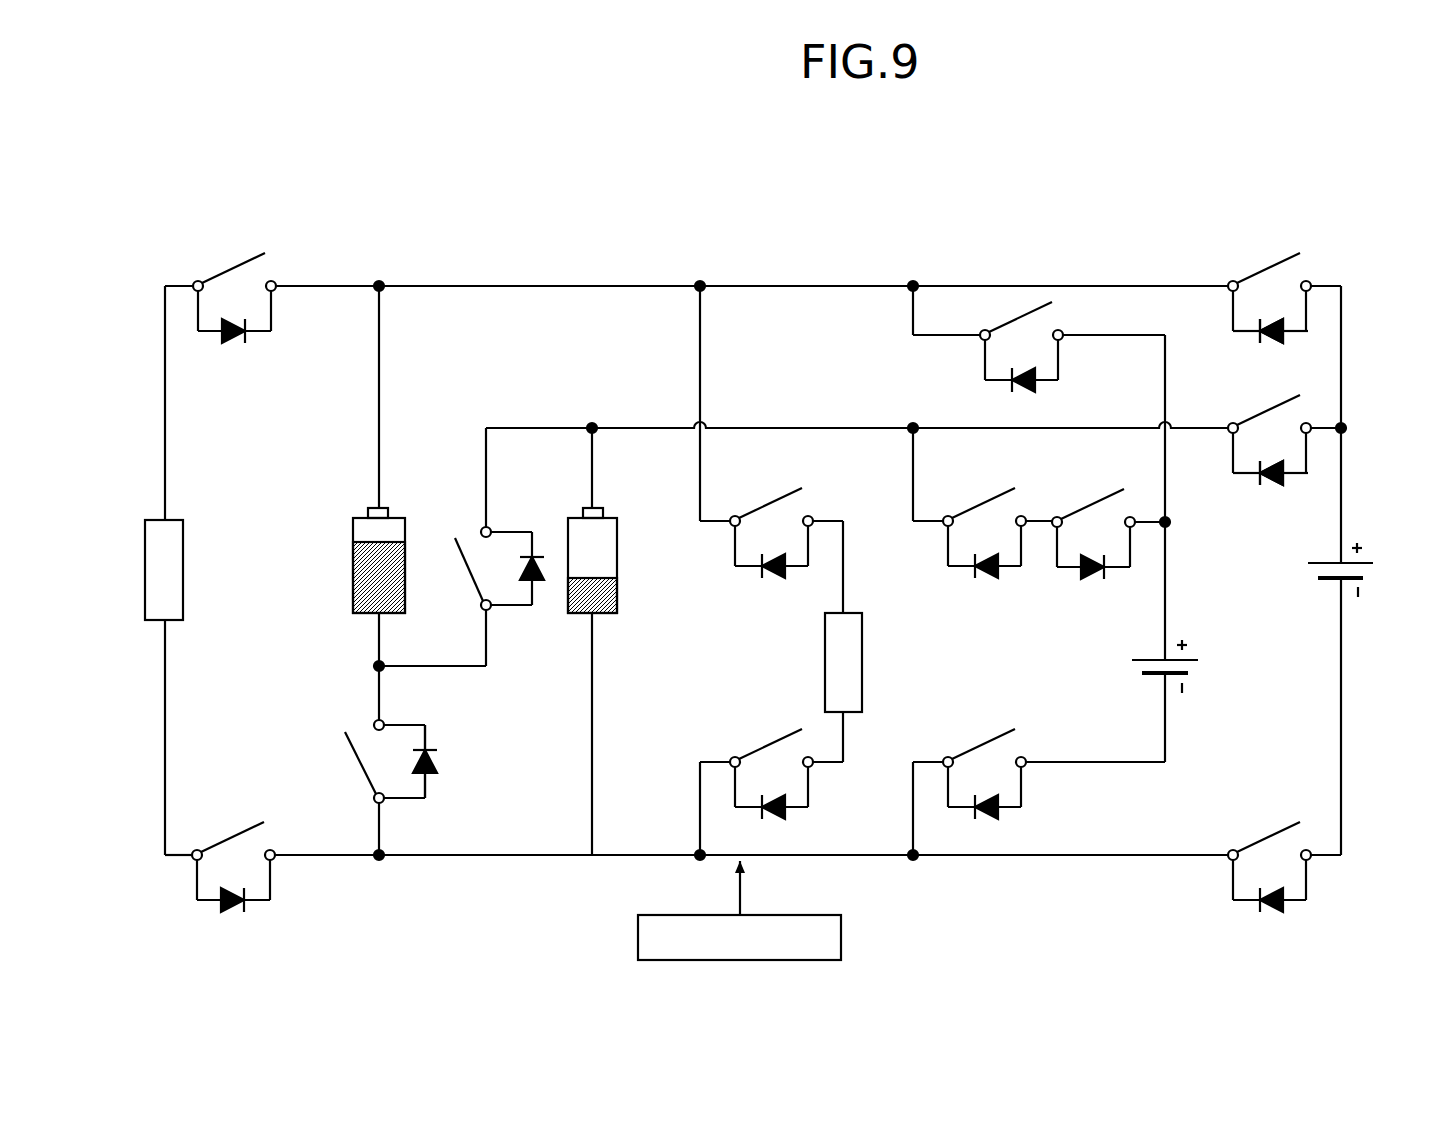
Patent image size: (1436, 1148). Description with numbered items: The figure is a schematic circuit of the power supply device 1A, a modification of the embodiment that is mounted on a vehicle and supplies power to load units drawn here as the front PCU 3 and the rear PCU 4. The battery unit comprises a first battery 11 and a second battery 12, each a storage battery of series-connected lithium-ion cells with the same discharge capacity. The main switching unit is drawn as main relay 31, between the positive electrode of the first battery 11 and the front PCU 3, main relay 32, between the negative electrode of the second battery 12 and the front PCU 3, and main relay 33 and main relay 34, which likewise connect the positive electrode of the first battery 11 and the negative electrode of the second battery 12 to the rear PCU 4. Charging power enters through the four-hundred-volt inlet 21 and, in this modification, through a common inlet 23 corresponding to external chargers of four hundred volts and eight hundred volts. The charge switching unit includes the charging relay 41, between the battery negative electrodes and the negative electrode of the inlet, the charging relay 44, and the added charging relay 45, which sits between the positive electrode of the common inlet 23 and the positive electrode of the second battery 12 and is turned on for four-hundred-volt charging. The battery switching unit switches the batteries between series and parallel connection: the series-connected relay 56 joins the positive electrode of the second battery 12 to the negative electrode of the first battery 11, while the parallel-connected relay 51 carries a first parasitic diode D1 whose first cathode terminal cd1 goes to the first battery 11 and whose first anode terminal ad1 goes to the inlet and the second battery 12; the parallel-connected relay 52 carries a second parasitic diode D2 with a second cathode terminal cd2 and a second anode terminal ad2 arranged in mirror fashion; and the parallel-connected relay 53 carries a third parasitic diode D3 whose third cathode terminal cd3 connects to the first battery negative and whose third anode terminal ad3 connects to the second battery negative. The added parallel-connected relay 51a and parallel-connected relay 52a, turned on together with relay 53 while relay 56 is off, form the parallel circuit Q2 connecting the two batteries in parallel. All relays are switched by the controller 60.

The power supply device 1A is at (832, 192).
The front PCU 3 is at (183, 558).
The rear PCU 4 is at (862, 632).
The first battery 11 is at (403, 515).
The second battery 12 is at (617, 560).
The 400 V inlet 21 is at (1338, 562).
The common inlet 23 is at (1162, 655).
The main relay 31 is at (222, 258).
The main relay 32 is at (226, 822).
The main relay 33 is at (766, 493).
The main relay 34 is at (754, 735).
The charging relay 41 is at (1258, 830).
The charging relay 44 is at (961, 740).
The charging relay 45 is at (1080, 493).
The parallel-connected relay 51 is at (1258, 260).
The parallel-connected relay 51a is at (1013, 307).
The parallel-connected relay 52 is at (1245, 410).
The parallel-connected relay 52a is at (971, 493).
The parallel-connected relay 53 is at (352, 777).
The series-connected relay 56 is at (462, 582).
The controller 60 is at (811, 902).
The parallel circuit Q2 is at (976, 866).
The first parasitic diode D1 is at (1272, 343).
The second parasitic diode D2 is at (1272, 487).
The third parasitic diode D3 is at (437, 762).
The first cathode terminal cd1 is at (1243, 333).
The second cathode terminal cd2 is at (1243, 478).
The third cathode terminal cd3 is at (426, 738).
The first anode terminal ad1 is at (1297, 333).
The second anode terminal ad2 is at (1297, 477).
The third anode terminal ad3 is at (426, 790).